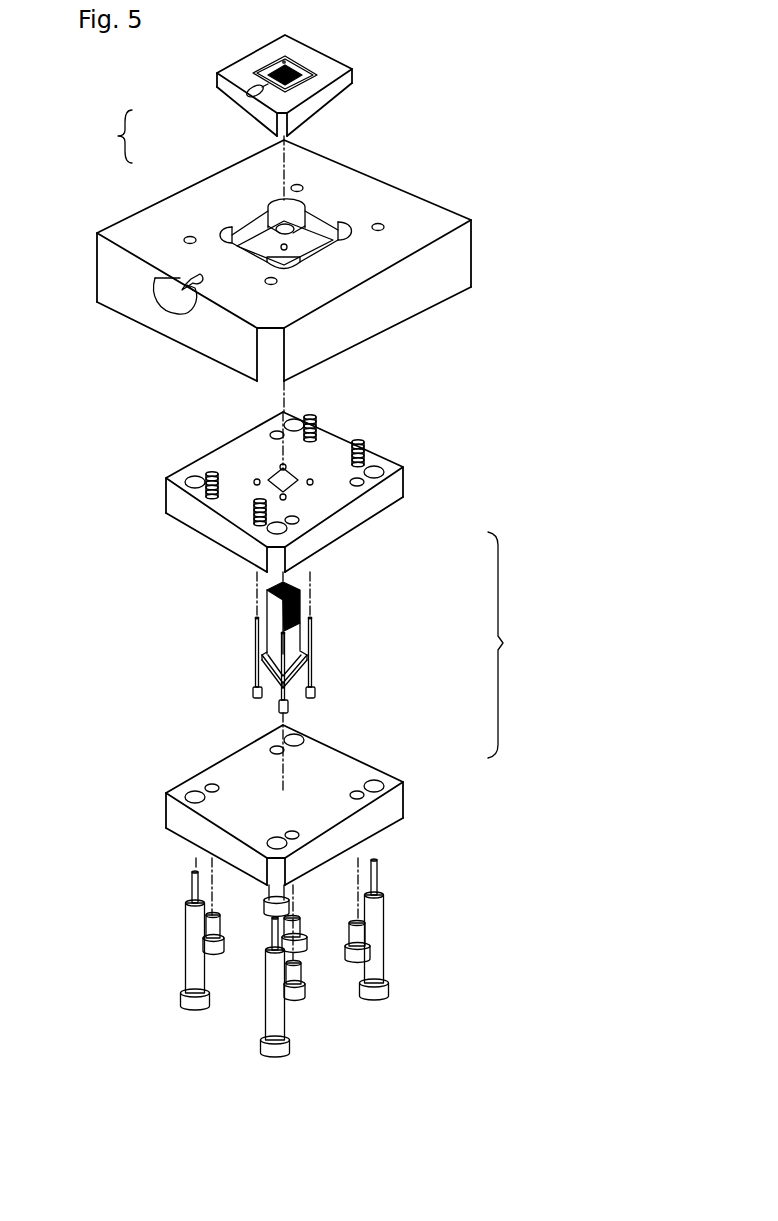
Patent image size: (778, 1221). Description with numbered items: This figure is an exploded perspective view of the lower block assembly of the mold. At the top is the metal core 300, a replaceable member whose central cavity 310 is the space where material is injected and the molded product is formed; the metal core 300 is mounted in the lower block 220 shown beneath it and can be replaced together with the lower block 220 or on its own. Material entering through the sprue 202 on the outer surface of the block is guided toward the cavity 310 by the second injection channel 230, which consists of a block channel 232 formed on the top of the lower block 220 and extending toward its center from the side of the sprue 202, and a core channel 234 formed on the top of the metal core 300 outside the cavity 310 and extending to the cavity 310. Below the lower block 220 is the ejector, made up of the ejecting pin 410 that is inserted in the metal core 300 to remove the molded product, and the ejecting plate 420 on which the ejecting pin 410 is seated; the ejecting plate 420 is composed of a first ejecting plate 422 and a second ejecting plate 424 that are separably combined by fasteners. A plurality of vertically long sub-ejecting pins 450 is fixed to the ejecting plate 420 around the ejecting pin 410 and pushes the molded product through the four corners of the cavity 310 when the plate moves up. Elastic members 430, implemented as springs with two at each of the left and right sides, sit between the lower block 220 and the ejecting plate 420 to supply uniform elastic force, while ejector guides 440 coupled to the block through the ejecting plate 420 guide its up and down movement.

The sprue 202 is at (170, 296).
The lower block 220 is at (368, 185).
The second injection channel 230 is at (106, 136).
The block channel 232 is at (241, 94).
The core channel 234 is at (187, 277).
The metal core 300 is at (322, 62).
The cavity 310 is at (268, 63).
The ejecting pin 410 is at (272, 602).
The ejecting plate 420 is at (517, 645).
The first ejecting plate 422 is at (377, 507).
The second ejecting plate 424 is at (363, 767).
The elastic members 430 is at (205, 472).
The ejector guides 440 is at (388, 990).
The sub-ejecting pins 450 is at (262, 666).